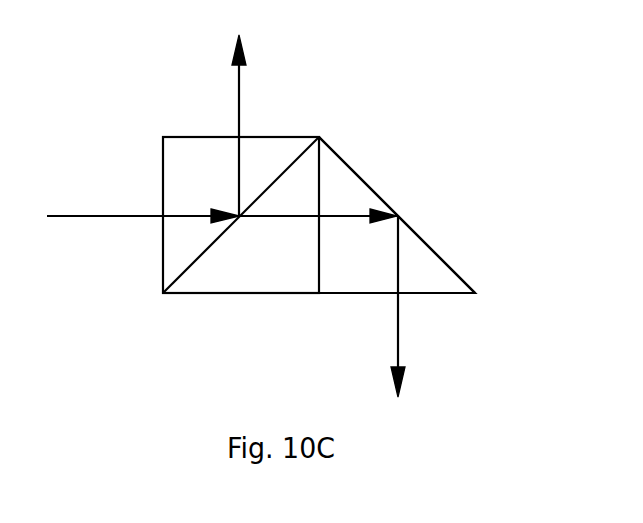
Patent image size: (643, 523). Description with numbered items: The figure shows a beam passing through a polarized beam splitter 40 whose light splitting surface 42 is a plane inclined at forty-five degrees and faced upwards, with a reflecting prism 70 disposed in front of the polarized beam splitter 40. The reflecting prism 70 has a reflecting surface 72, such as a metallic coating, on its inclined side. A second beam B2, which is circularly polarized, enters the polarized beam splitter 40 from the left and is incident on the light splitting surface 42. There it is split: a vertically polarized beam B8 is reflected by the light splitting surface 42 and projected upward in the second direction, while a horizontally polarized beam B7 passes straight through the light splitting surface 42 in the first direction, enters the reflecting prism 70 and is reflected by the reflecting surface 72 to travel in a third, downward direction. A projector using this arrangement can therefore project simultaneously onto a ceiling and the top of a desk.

The polarized beam splitter 40 is at (268, 162).
The light splitting surface 42 is at (203, 255).
The reflecting prism 70 is at (420, 267).
The reflecting surface 72 is at (367, 180).
The second beam B2 is at (123, 215).
The horizontally polarized beam B7 is at (398, 331).
The vertically polarized beam B8 is at (239, 95).